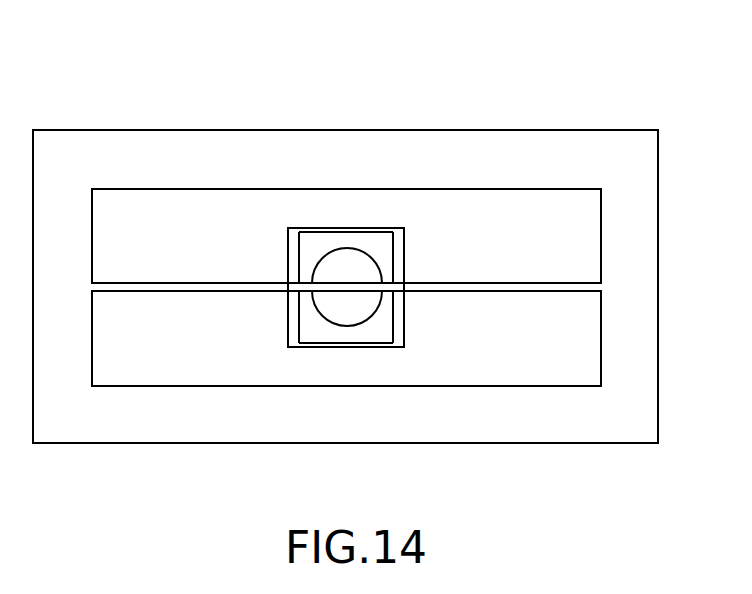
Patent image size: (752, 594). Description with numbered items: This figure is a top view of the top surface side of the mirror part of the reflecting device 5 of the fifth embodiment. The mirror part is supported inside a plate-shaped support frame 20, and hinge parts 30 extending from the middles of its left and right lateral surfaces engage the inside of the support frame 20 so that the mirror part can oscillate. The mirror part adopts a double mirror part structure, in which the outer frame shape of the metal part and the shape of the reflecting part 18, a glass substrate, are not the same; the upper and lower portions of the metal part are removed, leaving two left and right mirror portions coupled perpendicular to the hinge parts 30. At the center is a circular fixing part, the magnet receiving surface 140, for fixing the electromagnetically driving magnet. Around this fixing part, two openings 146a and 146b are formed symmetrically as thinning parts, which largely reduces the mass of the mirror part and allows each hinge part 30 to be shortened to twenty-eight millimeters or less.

The reflecting device 5 is at (698, 502).
The reflecting part 18 is at (347, 287).
The support frame 20 is at (545, 428).
The hinge part 30 is at (510, 283).
The magnet receiving surface 140 is at (327, 309).
The opening 146a is at (343, 242).
The opening 146b is at (349, 333).